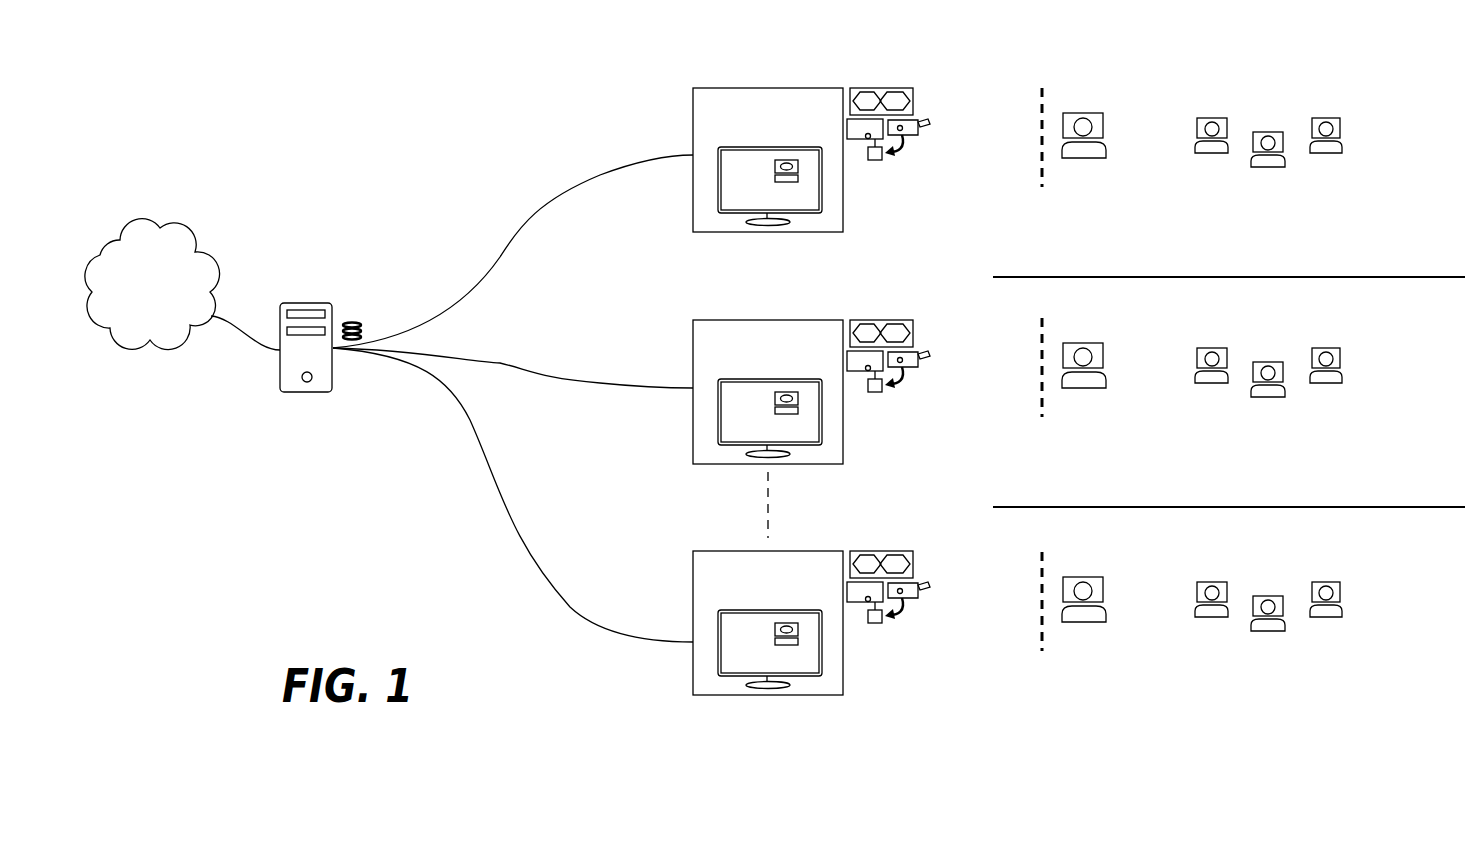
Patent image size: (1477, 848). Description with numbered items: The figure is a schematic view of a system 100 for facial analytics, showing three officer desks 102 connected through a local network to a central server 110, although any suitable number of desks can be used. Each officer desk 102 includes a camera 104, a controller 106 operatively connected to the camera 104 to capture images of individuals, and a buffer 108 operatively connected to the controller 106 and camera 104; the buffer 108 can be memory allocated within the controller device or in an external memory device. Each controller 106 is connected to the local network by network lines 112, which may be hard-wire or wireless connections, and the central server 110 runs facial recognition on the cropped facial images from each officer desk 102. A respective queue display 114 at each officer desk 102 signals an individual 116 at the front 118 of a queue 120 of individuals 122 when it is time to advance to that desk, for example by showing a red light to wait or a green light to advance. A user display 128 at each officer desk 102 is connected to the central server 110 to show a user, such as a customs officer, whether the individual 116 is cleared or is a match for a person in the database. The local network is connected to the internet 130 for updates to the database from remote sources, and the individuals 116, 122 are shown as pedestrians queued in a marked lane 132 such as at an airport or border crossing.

The system 100 is at (338, 164).
The officer desk 102 is at (693, 105).
The camera 104 is at (922, 120).
The controller 106 is at (862, 140).
The buffer 108 is at (884, 161).
The central server 110 is at (307, 303).
The network lines 112 is at (535, 202).
The queue display 114 is at (913, 88).
The individual 116 is at (1107, 153).
The front 118 is at (1042, 187).
The queue 120 is at (1294, 52).
The individuals 122 is at (1228, 138).
The user display 128 is at (732, 213).
The internet 130 is at (132, 217).
The marked lane 132 is at (1145, 283).